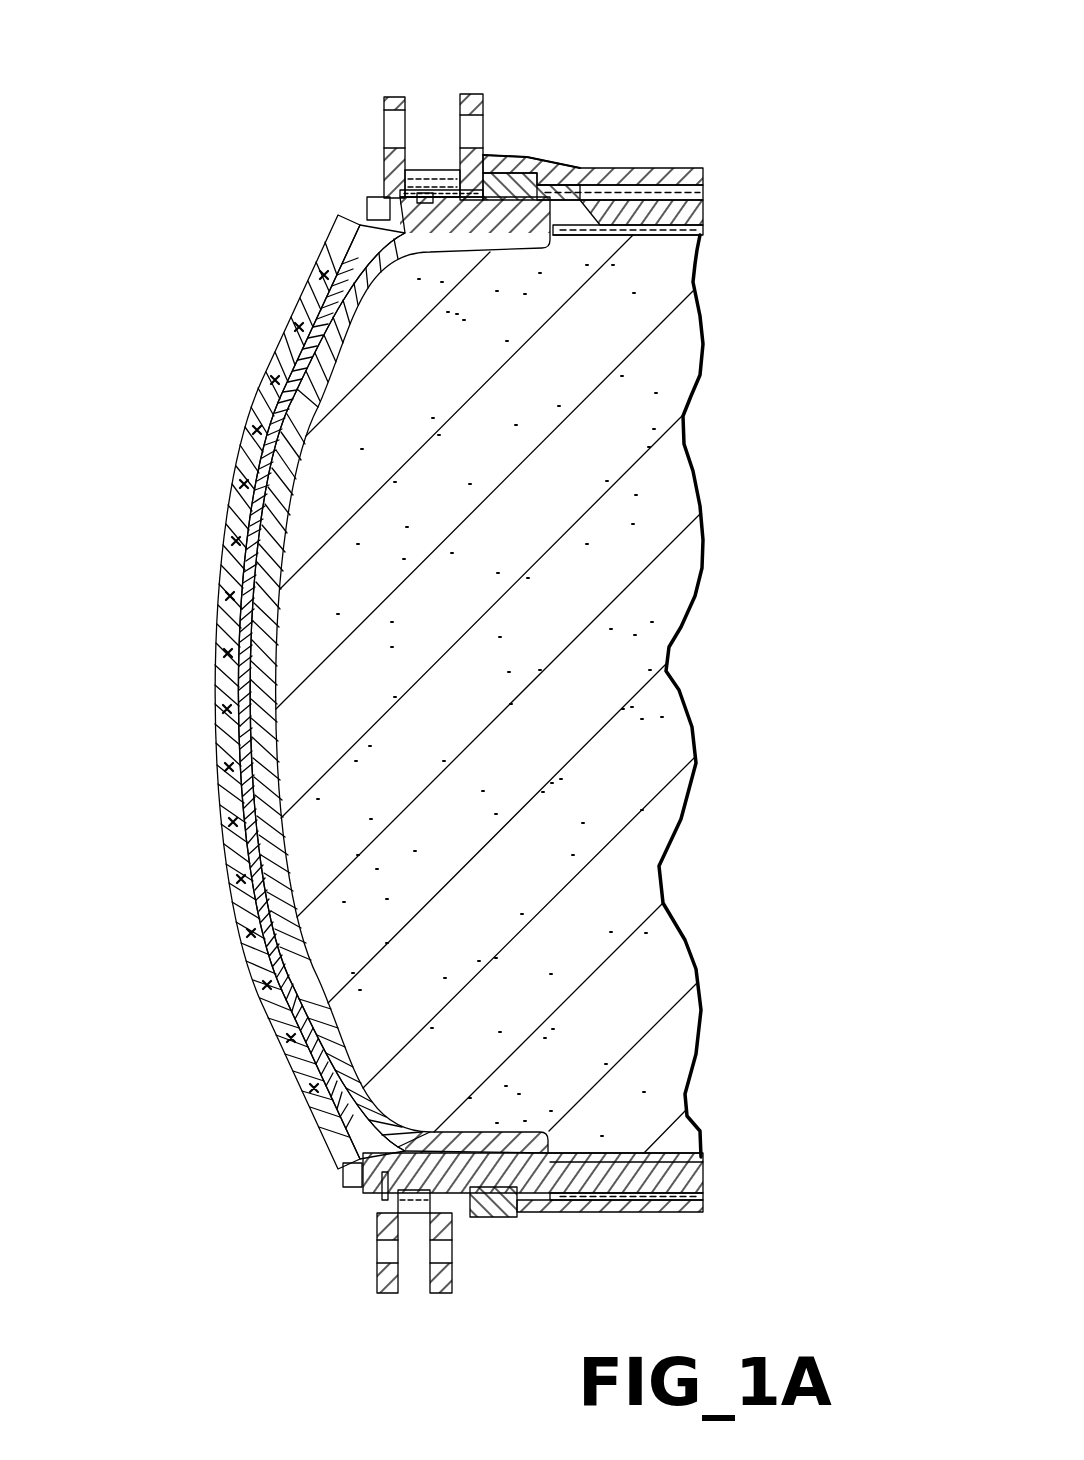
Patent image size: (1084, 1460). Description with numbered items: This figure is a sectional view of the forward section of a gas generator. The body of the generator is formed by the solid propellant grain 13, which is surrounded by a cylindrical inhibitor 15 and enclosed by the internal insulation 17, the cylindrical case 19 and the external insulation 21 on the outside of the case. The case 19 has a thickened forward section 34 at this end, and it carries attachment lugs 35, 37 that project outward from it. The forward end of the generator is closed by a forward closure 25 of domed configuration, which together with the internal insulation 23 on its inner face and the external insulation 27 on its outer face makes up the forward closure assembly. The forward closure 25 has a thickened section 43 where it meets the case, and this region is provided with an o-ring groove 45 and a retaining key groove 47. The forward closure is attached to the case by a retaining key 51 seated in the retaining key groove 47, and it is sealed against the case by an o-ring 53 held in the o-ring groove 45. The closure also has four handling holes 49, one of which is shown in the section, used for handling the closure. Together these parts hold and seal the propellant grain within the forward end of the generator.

The propellant grain 13 is at (652, 397).
The inhibitor 15 is at (702, 168).
The internal insulation 17 is at (667, 205).
The case 19 is at (630, 187).
The external insulation 21 is at (578, 177).
The internal insulation 23 is at (290, 457).
The forward closure case 25 is at (253, 542).
The external insulation 27 is at (225, 643).
The thickened forward section 34 is at (540, 160).
The attachment lug 35 is at (373, 1282).
The attachment lug 37 is at (385, 100).
The thickened section 43 is at (385, 236).
The o-ring groove 45 is at (443, 170).
The retaining key groove 47 is at (415, 190).
The handling hole 49 is at (372, 212).
The retaining key 51 is at (427, 193).
The o-ring 53 is at (483, 150).